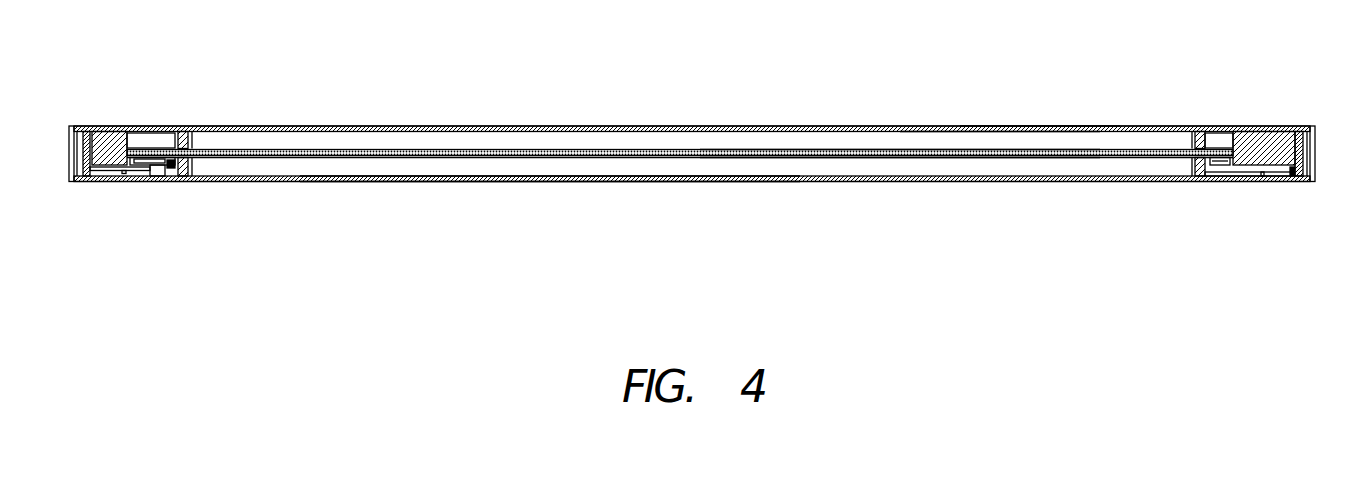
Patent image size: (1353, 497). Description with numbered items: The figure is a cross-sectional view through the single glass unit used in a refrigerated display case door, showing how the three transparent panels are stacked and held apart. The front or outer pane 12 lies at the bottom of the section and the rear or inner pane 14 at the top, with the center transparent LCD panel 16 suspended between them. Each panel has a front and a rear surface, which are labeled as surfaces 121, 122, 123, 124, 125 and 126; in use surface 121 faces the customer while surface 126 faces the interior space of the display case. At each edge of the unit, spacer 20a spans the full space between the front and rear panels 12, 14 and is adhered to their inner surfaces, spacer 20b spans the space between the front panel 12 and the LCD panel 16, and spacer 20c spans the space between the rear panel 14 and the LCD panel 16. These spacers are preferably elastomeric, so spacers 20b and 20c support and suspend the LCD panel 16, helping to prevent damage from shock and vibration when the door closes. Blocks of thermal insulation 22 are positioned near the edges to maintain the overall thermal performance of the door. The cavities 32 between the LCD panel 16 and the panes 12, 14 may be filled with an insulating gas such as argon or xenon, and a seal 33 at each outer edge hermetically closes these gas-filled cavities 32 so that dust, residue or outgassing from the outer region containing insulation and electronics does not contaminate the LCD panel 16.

The front pane 12 is at (340, 182).
The rear pane 14 is at (325, 127).
The transparent LCD panel 16 is at (410, 150).
The spacer 20a is at (83, 154).
The spacer 20b is at (185, 178).
The spacer 20c is at (187, 127).
The insulation 22 is at (117, 127).
The cavity 32 is at (1100, 140).
The seal 33 is at (78, 138).
The surface 121 is at (537, 177).
The surface 122 is at (586, 181).
The surface 123 is at (828, 158).
The surface 124 is at (937, 150).
The surface 125 is at (963, 140).
The surface 126 is at (1040, 127).